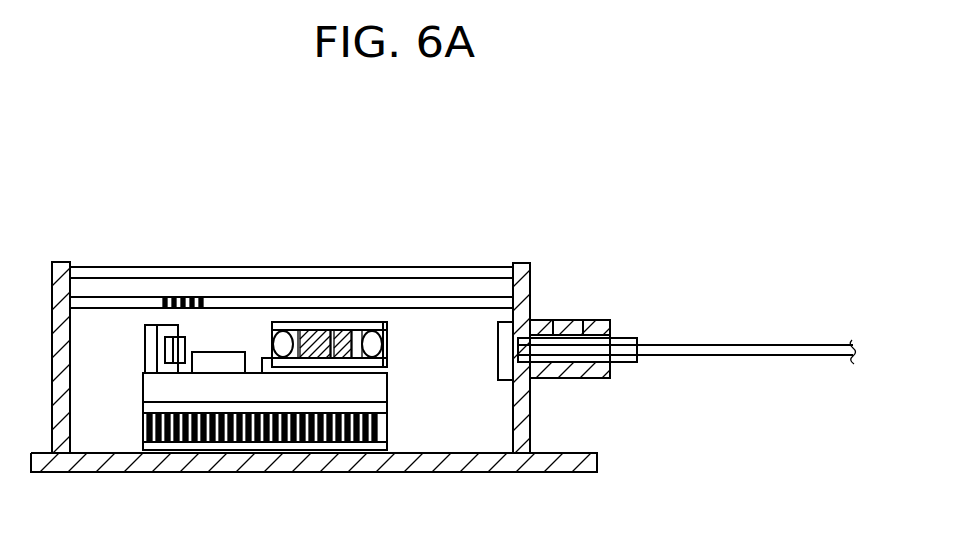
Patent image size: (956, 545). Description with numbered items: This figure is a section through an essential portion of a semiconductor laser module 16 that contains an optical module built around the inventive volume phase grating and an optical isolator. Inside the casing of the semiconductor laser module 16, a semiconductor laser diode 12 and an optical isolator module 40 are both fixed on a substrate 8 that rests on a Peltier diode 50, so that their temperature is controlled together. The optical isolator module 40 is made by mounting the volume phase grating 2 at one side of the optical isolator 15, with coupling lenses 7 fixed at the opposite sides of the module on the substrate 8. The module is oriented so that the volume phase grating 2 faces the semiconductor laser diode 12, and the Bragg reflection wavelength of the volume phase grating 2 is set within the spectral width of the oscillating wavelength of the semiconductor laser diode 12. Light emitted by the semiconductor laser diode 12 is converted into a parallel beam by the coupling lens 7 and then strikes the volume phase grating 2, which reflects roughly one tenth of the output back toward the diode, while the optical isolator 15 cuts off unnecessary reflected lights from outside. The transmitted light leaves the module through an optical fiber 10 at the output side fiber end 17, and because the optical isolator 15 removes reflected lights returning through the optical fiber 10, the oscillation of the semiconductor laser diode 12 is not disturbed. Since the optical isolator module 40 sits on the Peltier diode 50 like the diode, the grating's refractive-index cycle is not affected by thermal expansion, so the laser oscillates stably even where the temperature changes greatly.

The semiconductor laser module 16 is at (60, 263).
The semiconductor laser diode 12 is at (222, 352).
The coupling lens 7 is at (272, 338).
The optical isolator module 40 is at (331, 274).
The volume phase grating 2 is at (307, 329).
The optical isolator 15 is at (340, 329).
The optical fiber 10 is at (705, 345).
The output side fiber end 17 is at (594, 380).
The Peltier diode 50 is at (265, 442).
The substrate 8 is at (385, 373).